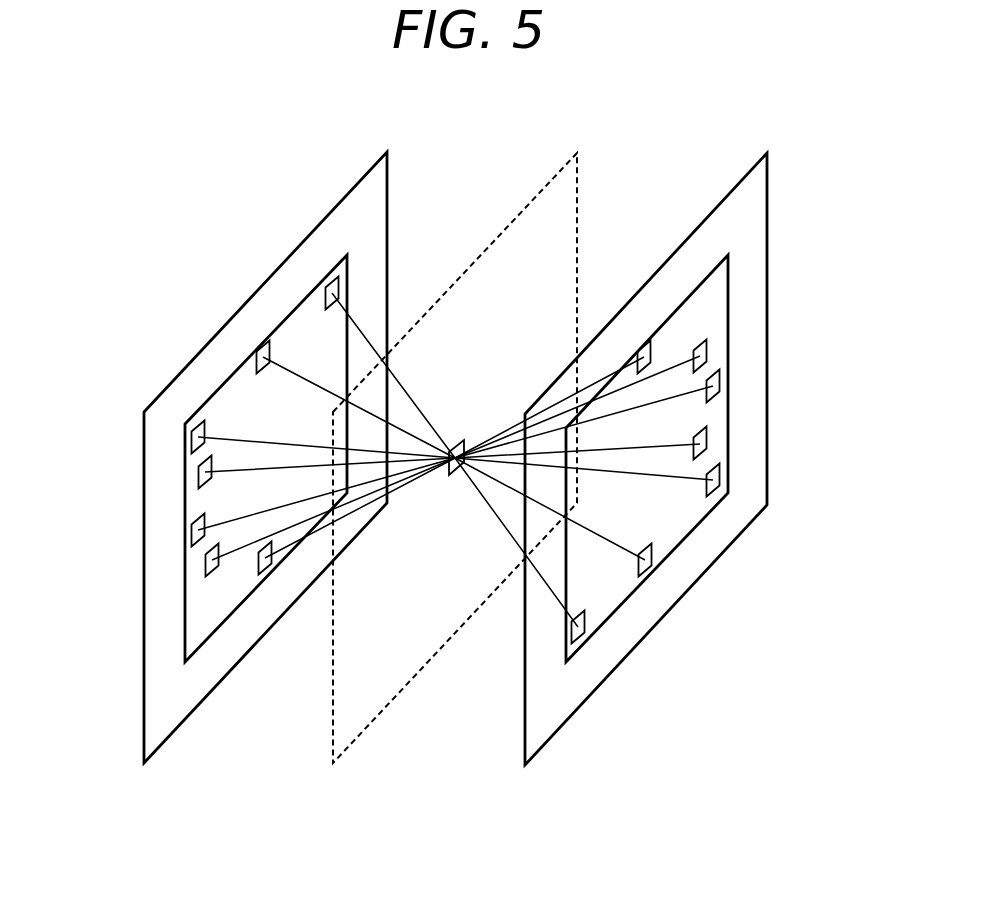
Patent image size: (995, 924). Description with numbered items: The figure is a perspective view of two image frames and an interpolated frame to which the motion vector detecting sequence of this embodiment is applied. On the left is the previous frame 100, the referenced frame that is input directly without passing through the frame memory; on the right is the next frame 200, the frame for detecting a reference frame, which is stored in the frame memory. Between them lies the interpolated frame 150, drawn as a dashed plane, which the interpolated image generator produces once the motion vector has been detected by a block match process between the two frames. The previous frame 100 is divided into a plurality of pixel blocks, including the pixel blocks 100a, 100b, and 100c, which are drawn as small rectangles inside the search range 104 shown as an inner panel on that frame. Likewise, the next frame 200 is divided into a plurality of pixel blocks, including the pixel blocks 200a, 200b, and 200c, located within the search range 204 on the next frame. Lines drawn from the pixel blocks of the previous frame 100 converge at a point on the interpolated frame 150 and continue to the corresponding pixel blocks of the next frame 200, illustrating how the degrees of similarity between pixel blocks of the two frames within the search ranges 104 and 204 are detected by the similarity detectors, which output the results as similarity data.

The previous frame 100 is at (185, 721).
The search range 104 is at (185, 594).
The pixel block 100a is at (198, 421).
The pixel block 100b is at (257, 371).
The pixel block 100c is at (331, 282).
The interpolated frame 150 is at (371, 723).
The next frame 200 is at (562, 724).
The search range 204 is at (723, 402).
The pixel block 200a is at (715, 495).
The pixel block 200b is at (648, 570).
The pixel block 200c is at (585, 640).